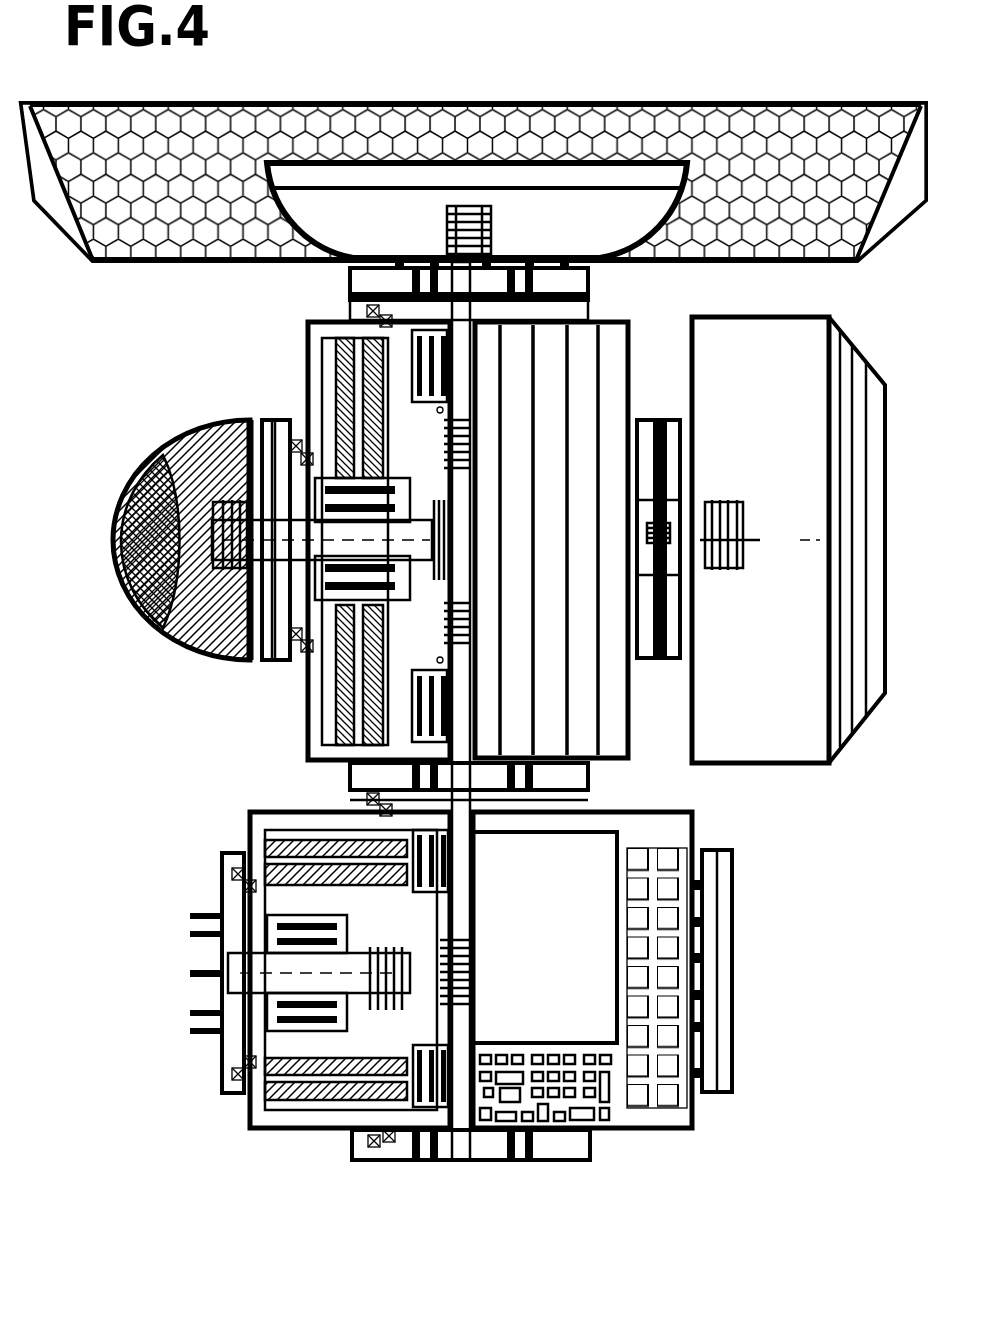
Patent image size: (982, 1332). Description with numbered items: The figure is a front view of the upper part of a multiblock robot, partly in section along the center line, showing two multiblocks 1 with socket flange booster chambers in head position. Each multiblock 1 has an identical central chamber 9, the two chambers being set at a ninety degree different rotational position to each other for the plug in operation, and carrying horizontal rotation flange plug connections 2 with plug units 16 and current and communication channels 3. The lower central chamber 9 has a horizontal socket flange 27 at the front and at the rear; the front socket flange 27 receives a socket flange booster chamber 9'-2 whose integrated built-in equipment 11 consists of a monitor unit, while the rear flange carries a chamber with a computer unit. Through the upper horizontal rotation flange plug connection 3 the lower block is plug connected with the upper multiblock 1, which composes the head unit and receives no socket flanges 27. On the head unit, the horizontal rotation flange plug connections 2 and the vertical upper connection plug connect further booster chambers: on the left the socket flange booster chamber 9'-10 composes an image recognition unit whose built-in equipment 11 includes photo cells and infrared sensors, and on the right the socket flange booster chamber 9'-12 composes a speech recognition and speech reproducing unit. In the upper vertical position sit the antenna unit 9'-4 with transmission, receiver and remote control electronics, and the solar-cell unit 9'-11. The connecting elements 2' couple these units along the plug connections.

The multiblock 1 is at (620, 555).
The horizontal rotation flange plug connection 2 is at (489, 748).
The connecting element 2' is at (487, 713).
The current and communication channel 3 is at (487, 212).
The central chamber 9 is at (320, 752).
The integrated built-in equipment 11 is at (345, 692).
The plug unit 16 is at (696, 520).
The horizontal socket flange 27 is at (668, 420).
The socket flange booster chamber 9'-2 is at (582, 970).
The antenna unit 9'-4 is at (477, 135).
The image recognition unit 9'-10 is at (162, 515).
The solar-cell unit 9'-11 is at (473, 216).
The speech recognition and speech reproducing unit 9'-12 is at (785, 579).